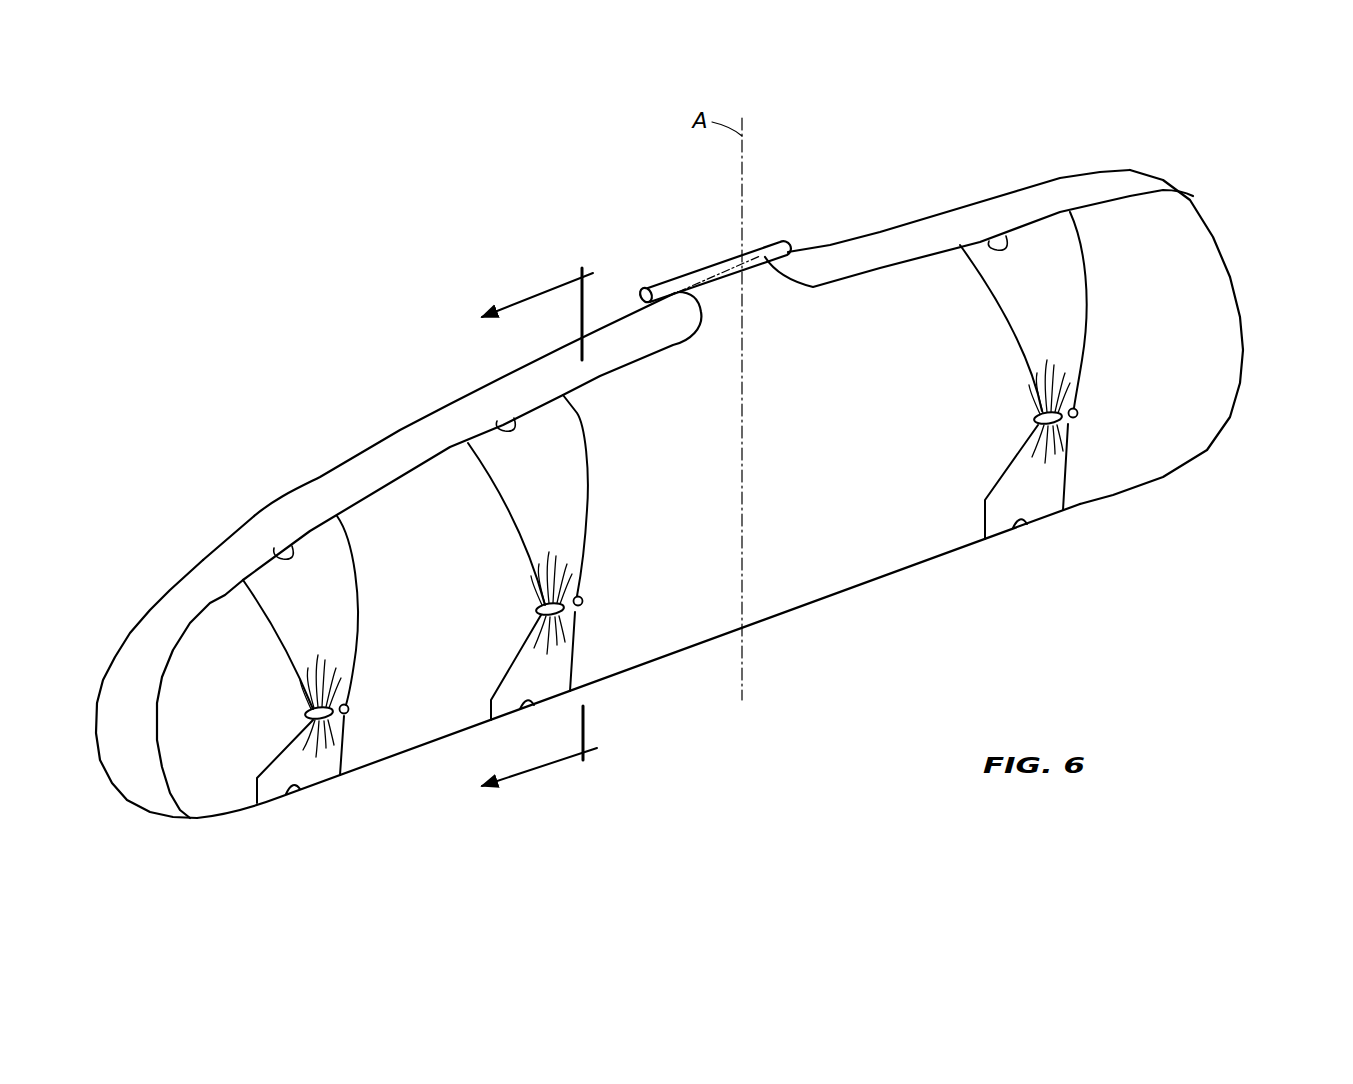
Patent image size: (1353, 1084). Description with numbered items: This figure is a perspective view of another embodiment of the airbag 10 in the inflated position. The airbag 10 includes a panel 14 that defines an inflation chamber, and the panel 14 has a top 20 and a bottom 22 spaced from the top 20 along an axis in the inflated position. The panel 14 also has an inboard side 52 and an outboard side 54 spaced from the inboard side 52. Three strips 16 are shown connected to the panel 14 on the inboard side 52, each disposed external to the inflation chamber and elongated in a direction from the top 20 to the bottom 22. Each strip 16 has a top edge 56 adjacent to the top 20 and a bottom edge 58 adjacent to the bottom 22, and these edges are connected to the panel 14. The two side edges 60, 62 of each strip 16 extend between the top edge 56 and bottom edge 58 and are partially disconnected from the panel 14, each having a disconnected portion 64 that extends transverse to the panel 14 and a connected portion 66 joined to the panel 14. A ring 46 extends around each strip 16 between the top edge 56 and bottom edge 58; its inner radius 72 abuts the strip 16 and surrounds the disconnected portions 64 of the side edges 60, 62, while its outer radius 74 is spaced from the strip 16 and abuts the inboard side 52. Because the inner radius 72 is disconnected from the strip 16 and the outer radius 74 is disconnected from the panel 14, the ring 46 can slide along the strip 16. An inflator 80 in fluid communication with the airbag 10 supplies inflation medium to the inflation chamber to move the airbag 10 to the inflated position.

The airbag 10 is at (136, 355).
The panel 14 is at (1197, 340).
The strip 16 is at (689, 489).
The top 20 is at (183, 603).
The bottom 22 is at (245, 812).
The ring 46 is at (733, 563).
The inboard side 52 is at (940, 252).
The outboard side 54 is at (890, 229).
The top edge 56 is at (292, 546).
The bottom edge 58 is at (292, 786).
The side edge 60 is at (266, 613).
The side edge 62 is at (588, 424).
The disconnected portion 64 is at (696, 460).
The connected portion 66 is at (588, 403).
The inner radius 72 is at (337, 721).
The outer radius 74 is at (341, 703).
The inflator 80 is at (708, 263).